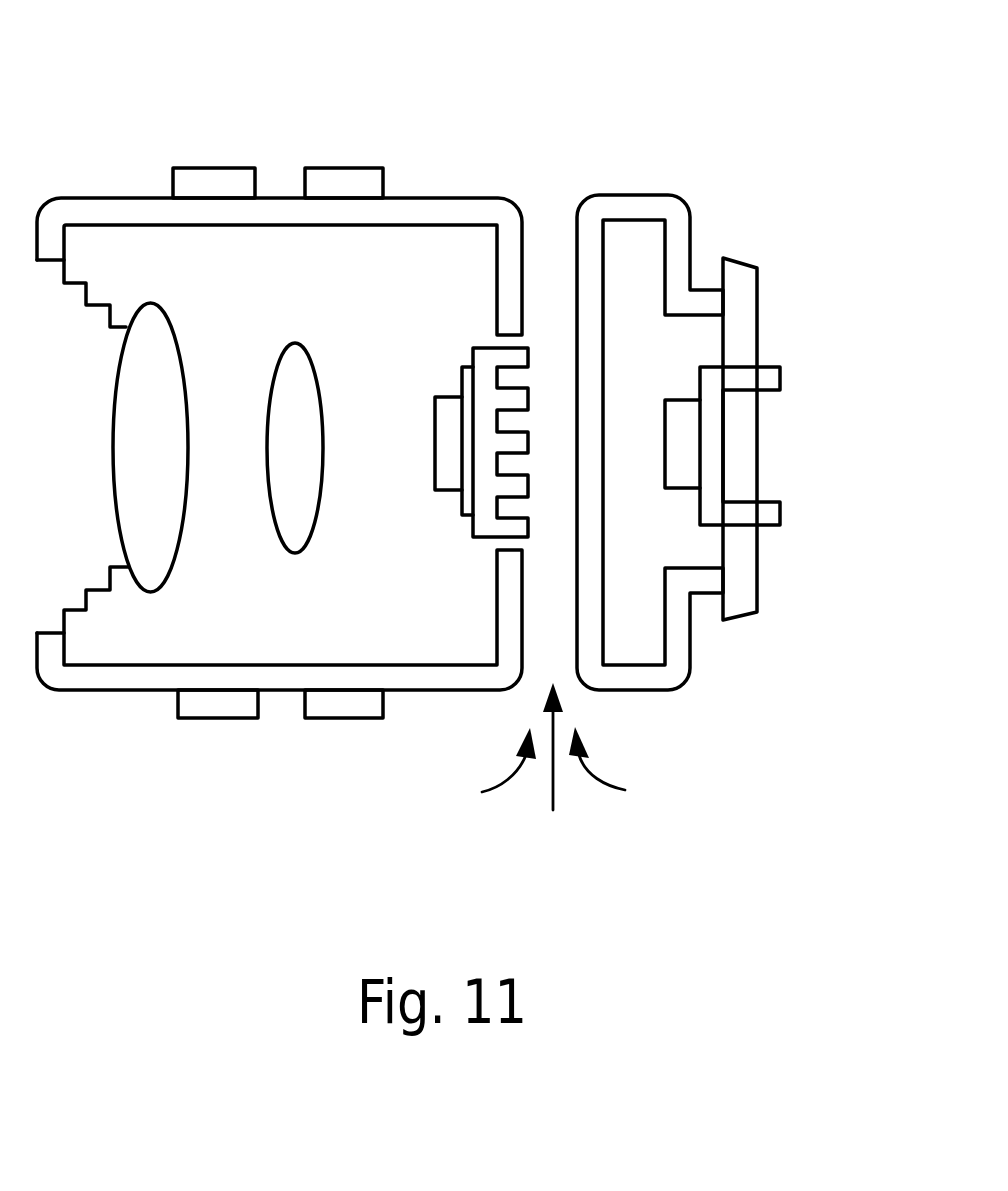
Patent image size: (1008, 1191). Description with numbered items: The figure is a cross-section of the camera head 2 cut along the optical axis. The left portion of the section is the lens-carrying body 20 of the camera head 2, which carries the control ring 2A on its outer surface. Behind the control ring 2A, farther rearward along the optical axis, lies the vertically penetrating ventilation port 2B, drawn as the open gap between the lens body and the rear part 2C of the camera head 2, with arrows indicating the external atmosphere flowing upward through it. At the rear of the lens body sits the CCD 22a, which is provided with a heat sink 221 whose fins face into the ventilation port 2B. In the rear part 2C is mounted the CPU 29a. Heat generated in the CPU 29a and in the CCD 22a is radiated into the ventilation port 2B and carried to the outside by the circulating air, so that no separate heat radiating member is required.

The camera head 2 is at (447, 102).
The housing 20 is at (122, 212).
The control ring 2A is at (220, 168).
The ventilation port 2B is at (566, 172).
The cover member 2C is at (692, 237).
The CCD 22a is at (447, 482).
The heat sink 221 is at (492, 523).
The CPU 29a is at (687, 431).